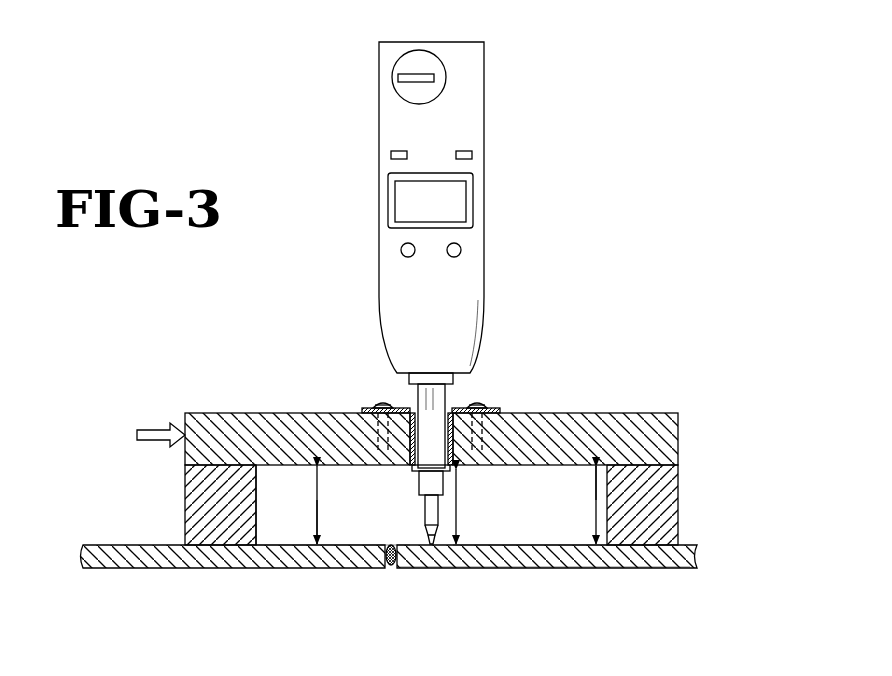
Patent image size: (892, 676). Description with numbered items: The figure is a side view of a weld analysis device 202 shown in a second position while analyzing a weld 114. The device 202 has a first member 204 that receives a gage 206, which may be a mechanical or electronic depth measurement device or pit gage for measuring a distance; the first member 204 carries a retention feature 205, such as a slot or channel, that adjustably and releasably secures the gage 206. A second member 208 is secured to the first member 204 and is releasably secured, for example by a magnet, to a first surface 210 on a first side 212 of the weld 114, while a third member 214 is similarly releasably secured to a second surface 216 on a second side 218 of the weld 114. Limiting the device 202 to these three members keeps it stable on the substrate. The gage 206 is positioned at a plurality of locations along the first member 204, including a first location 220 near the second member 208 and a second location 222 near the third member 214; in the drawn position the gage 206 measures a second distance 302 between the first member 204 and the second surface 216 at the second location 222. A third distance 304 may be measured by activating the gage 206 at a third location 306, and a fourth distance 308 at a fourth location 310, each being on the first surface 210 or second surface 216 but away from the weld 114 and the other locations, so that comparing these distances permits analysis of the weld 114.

The device 202 is at (652, 181).
The first member 204 is at (652, 418).
The retention feature 205 is at (456, 410).
The gage 206 is at (467, 308).
The second member 208 is at (203, 520).
The first surface 210 is at (257, 518).
The first side 212 is at (230, 562).
The third member 214 is at (655, 518).
The second surface 216 is at (527, 545).
The second side 218 is at (648, 562).
The first location 220 is at (365, 545).
The second location 222 is at (437, 546).
The weld 114 is at (385, 556).
The second distance 302 is at (458, 512).
The third distance 304 is at (598, 497).
The third location 306 is at (596, 546).
The fourth distance 308 is at (316, 508).
The fourth location 310 is at (317, 546).